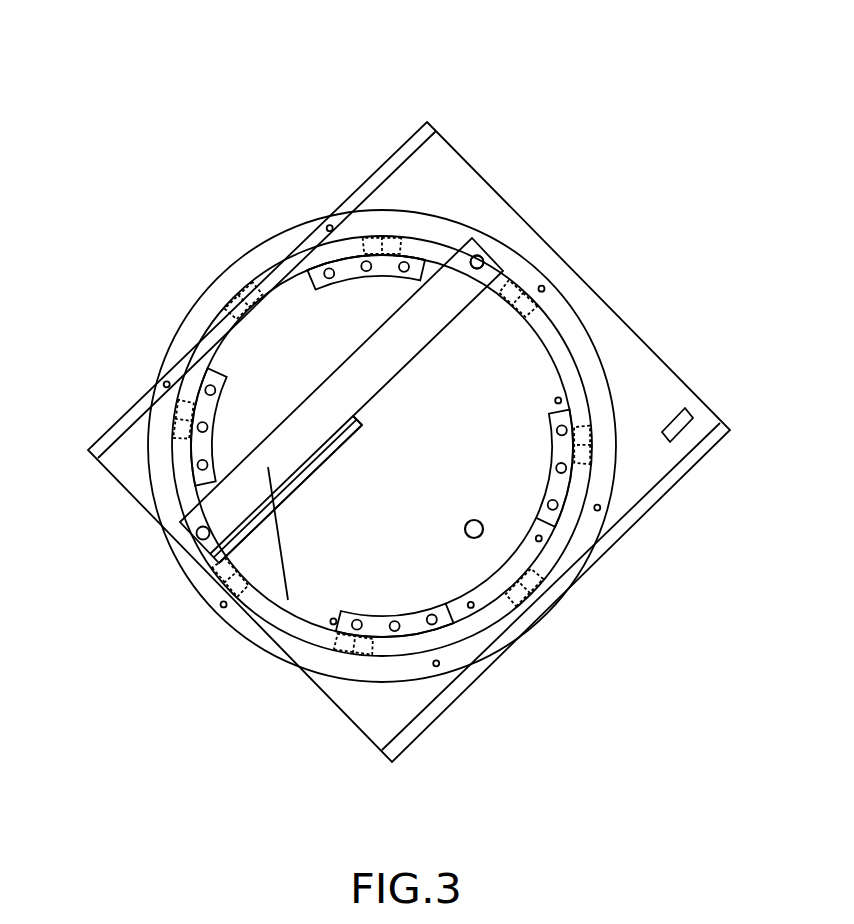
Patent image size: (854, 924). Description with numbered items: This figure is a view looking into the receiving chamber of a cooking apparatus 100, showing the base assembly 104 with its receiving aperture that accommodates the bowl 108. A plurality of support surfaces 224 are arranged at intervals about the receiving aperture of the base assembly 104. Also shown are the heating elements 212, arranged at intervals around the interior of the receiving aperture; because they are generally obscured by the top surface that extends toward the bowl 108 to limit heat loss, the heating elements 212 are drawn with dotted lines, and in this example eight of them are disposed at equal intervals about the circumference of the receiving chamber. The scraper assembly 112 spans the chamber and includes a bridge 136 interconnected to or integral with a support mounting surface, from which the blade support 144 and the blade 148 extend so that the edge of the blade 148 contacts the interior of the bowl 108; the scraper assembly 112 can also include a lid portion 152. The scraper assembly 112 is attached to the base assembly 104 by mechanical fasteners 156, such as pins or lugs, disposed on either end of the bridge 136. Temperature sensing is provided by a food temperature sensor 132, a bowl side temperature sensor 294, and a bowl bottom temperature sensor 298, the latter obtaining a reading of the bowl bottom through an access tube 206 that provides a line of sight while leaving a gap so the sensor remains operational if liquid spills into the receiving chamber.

The cooking apparatus 100 is at (434, 94).
The base assembly 104 is at (480, 197).
The bowl 108 is at (527, 350).
The scraper assembly 112 is at (424, 374).
The food temperature sensor 132 is at (278, 524).
The bridge 136 is at (425, 295).
The blade support 144 is at (335, 458).
The blade 148 is at (352, 416).
The lid portion 152 is at (298, 318).
The mechanical fasteners 156 is at (482, 257).
The access tube 206 is at (480, 533).
The heating elements 212 is at (244, 292).
The support surfaces 224 is at (318, 260).
The bowl side temperature sensor 294 is at (246, 296).
The bowl bottom temperature sensor 298 is at (474, 529).